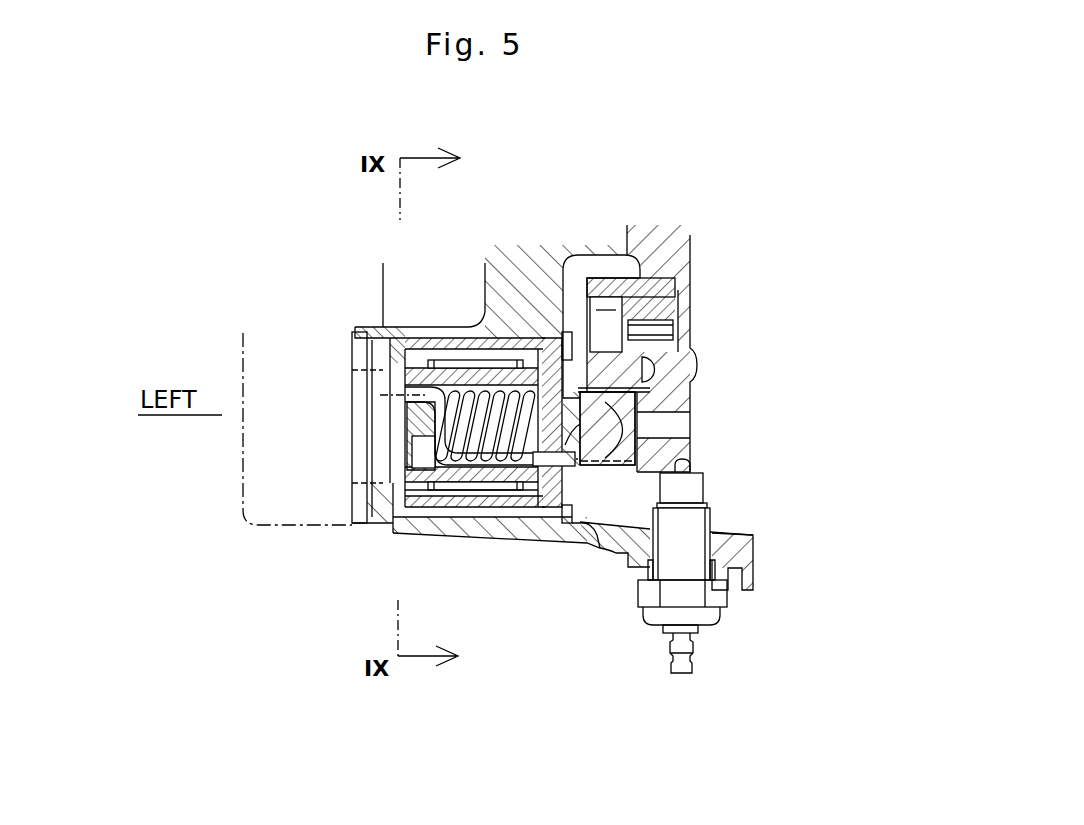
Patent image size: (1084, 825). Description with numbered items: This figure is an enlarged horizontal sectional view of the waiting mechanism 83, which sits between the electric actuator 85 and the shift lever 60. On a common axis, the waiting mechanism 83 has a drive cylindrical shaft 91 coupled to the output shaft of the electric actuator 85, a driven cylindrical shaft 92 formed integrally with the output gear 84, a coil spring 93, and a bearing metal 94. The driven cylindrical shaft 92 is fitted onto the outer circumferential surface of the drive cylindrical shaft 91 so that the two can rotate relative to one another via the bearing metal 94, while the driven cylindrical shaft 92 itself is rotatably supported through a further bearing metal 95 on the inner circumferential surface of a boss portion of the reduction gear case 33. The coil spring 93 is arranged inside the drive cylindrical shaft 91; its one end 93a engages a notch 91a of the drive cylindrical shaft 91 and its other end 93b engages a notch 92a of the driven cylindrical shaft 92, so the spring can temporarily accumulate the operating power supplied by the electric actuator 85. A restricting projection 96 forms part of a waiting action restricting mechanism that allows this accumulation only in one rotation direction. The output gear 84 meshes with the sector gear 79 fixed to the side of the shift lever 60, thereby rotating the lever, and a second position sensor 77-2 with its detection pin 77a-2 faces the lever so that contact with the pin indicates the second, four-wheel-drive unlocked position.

The reduction gear case 33 is at (432, 533).
The shift lever 60 is at (683, 262).
The sector gear 79 is at (613, 367).
The waiting mechanism 83 is at (378, 519).
The output gear 84 is at (633, 432).
The electric actuator 85 is at (288, 510).
The drive cylindrical shaft 91 is at (452, 345).
The notch of the drive cylindrical shaft 91a is at (427, 380).
The driven cylindrical shaft 92 is at (505, 345).
The notch of the driven cylindrical shaft 92a is at (608, 455).
The coil spring 93 is at (460, 535).
The one end of the coil spring 93a is at (423, 395).
The other end of the coil spring 93b is at (516, 530).
The bearing metal 94 is at (468, 345).
The bearing metal 95 is at (553, 345).
The restricting projection 96 is at (423, 330).
The second position sensor 77-2 is at (688, 568).
The detection pin 77a-2 is at (692, 466).